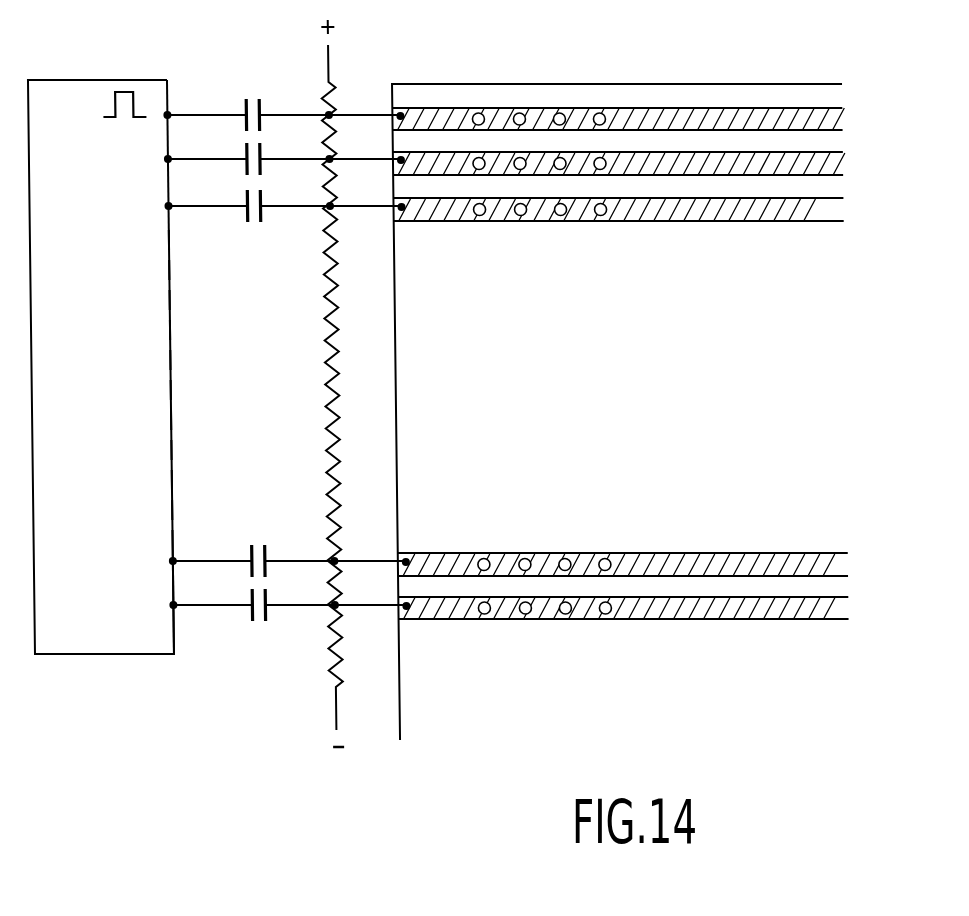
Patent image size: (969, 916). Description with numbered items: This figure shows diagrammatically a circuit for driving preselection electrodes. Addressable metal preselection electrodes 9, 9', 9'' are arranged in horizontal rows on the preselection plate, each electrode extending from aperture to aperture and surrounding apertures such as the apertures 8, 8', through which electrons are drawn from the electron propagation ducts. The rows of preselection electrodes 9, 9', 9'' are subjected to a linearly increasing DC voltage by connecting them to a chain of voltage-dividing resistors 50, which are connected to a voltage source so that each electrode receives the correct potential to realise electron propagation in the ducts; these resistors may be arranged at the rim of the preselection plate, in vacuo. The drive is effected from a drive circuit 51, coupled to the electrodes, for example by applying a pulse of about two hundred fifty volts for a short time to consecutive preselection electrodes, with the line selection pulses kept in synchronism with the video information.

The aperture 8 is at (490, 83).
The aperture 8' is at (463, 105).
The preselection electrode 9 is at (633, 121).
The preselection electrode 9' is at (637, 166).
The preselection electrode 9'' is at (641, 213).
The voltage-dividing resistors 50 is at (328, 712).
The drive circuit 51 is at (110, 642).